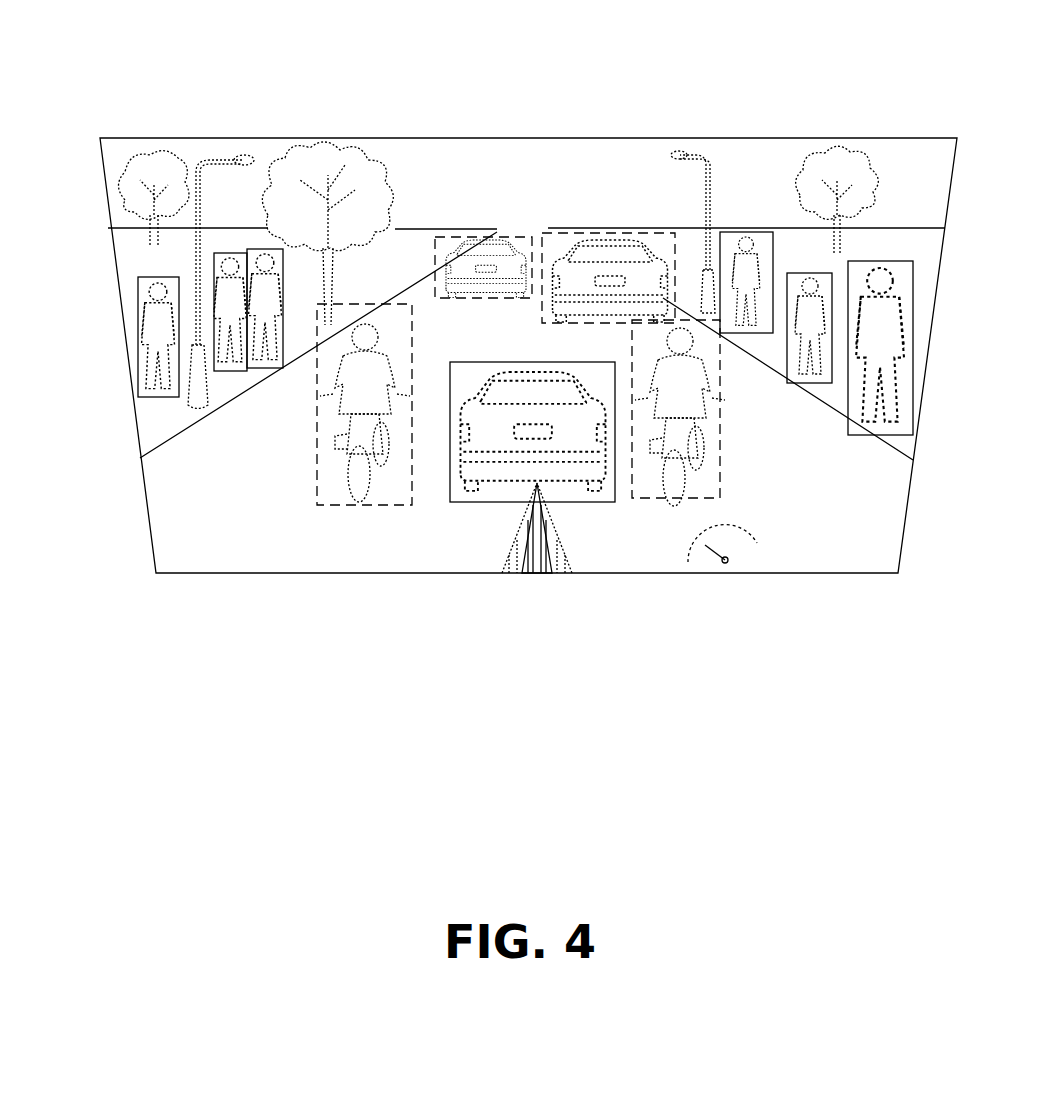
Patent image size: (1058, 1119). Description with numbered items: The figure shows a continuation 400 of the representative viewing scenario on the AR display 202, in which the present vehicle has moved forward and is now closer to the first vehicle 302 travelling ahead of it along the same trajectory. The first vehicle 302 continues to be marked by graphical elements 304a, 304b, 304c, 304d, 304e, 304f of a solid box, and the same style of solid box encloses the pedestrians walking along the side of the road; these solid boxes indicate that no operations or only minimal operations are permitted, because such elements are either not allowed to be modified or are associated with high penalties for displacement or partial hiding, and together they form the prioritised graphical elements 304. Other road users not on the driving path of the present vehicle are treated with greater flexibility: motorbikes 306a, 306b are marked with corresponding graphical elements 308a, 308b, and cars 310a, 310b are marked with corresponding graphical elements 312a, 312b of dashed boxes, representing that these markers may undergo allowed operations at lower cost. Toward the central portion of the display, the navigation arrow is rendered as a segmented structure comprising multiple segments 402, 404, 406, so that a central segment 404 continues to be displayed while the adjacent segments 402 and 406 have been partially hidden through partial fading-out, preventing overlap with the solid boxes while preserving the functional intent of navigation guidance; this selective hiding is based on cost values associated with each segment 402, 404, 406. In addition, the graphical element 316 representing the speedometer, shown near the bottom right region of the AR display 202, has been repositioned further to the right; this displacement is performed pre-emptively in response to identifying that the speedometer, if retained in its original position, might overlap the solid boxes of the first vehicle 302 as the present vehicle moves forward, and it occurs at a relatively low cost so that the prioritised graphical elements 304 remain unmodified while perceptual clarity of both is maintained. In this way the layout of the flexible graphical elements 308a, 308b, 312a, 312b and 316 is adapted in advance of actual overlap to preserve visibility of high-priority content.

The AR display 202 is at (528, 294).
The continuation of the representative viewing scenario 400 is at (526, 234).
The first vehicle 302 is at (478, 498).
The prioritised graphical elements 304 is at (483, 514).
The graphical element of a solid box 304a is at (111, 276).
The graphical element of a solid box 304b is at (220, 210).
The graphical element of a solid box 304c is at (281, 214).
The graphical element of a solid box 304d is at (765, 213).
The graphical element of a solid box 304e is at (833, 224).
The graphical element of a solid box 304f is at (900, 265).
The motorbike 306a is at (323, 471).
The motorbike 306b is at (797, 468).
The graphical element of a dashed box 308a is at (324, 486).
The graphical element of a dashed box 308b is at (796, 470).
The car 310a is at (448, 173).
The car 310b is at (666, 188).
The graphical element of a dashed box 312a is at (445, 172).
The graphical element of a dashed box 312b is at (671, 187).
The graphical element representing a speedometer 316 is at (730, 580).
The adjacent segment 402 is at (475, 609).
The central segment 404 is at (538, 588).
The adjacent segment 406 is at (600, 599).